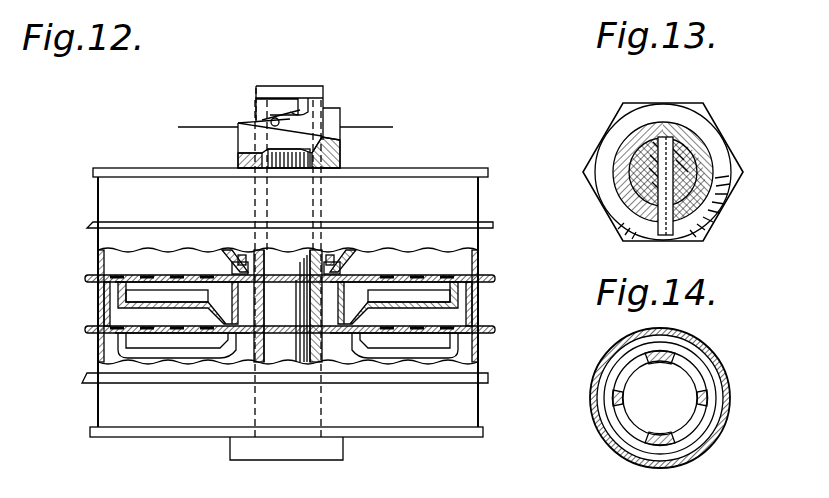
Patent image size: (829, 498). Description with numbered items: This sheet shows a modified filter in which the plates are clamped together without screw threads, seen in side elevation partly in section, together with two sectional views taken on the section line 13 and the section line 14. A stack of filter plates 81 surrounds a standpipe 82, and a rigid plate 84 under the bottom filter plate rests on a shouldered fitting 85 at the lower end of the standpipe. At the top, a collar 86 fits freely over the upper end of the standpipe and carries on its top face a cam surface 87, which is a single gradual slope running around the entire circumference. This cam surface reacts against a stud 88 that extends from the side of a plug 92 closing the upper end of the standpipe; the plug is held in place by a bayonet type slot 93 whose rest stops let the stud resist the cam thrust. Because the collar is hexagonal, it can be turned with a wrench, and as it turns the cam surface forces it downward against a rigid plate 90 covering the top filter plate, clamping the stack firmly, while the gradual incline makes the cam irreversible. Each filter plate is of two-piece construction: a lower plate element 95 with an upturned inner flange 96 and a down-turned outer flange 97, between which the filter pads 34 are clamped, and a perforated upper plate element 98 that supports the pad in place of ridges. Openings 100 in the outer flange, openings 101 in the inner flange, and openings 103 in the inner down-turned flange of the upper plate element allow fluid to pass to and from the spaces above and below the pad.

In FIG. 12, the section line 13— 13 is at (178, 127).
In FIG. 12, the section line 14— 14 is at (221, 290).
In FIG. 12, the filter pad 34 is at (496, 278).
In FIG. 12, the filter plate 81 is at (112, 192).
In FIG. 12, the standpipe 82 is at (326, 258).
In FIG. 13, the standpipe 82 is at (645, 128).
In FIG. 14, the standpipe 82 is at (706, 402).
In FIG. 12, the rigid plate 84 is at (192, 432).
In FIG. 12, the shouldered fitting 85 is at (238, 452).
In FIG. 12, the collar 86 is at (343, 152).
In FIG. 13, the collar 86 is at (698, 122).
In FIG. 12, the cam surface 87 is at (236, 126).
In FIG. 12, the stud 88 is at (280, 118).
In FIG. 13, the stud 88 is at (676, 227).
In FIG. 12, the rigid plate 90 is at (146, 170).
In FIG. 12, the plug 92 is at (264, 88).
In FIG. 13, the plug 92 is at (685, 162).
In FIG. 12, the bayonet type slot 93 is at (305, 104).
In FIG. 12, the lower plate element 95 is at (484, 296).
In FIG. 12, the inner flange 96 is at (288, 306).
In FIG. 14, the inner flange 96 is at (699, 365).
In FIG. 12, the outer flange 97 is at (484, 318).
In FIG. 12, the upper plate element 98 is at (410, 278).
In FIG. 14, the upper plate element 98 is at (702, 337).
In FIG. 12, the openings 100 is at (90, 329).
In FIG. 12, the openings 101 is at (292, 248).
In FIG. 12, the openings 103 is at (216, 312).